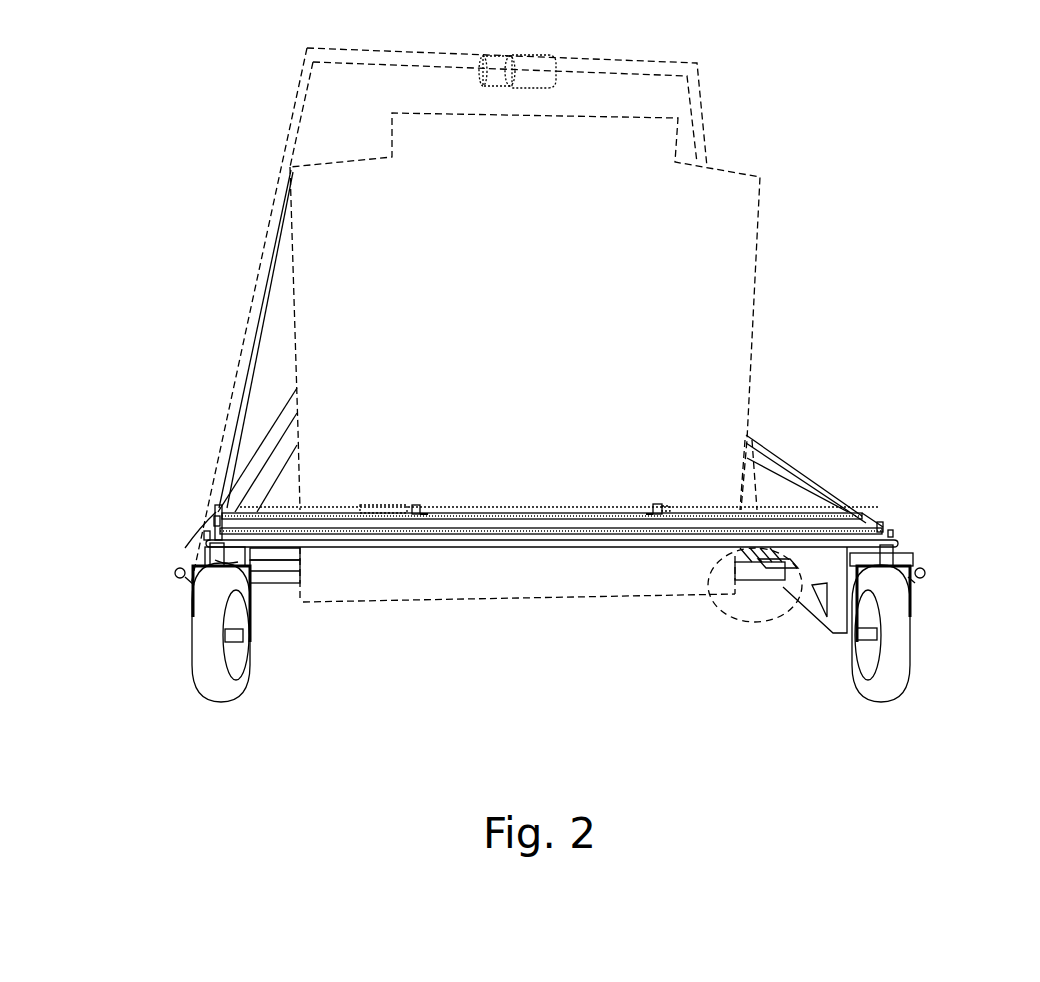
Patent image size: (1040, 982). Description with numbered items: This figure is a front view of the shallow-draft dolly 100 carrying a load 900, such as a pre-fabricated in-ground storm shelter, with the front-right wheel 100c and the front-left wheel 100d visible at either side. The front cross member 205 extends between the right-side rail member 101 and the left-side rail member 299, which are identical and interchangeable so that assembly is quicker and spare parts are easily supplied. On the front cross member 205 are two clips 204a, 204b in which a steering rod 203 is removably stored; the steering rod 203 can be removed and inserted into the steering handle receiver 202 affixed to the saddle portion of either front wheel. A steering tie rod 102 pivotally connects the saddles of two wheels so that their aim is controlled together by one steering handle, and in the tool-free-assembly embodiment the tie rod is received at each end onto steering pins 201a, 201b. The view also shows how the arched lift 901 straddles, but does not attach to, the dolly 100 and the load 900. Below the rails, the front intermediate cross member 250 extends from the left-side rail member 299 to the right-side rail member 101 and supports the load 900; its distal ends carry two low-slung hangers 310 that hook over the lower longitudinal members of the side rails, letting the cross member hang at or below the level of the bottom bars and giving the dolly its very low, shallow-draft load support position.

The shallow-draft dolly 100 is at (915, 150).
The front-right wheel 100c is at (200, 700).
The front-left wheel 100d is at (868, 700).
The right-side rail member 101 is at (185, 472).
The steering tie rod 102 is at (635, 546).
The steering pin 201a is at (205, 535).
The steering pin 201b is at (895, 532).
The steering handle receiver 202 is at (172, 578).
The steering rod 203 is at (538, 505).
The clip 204a is at (418, 504).
The clip 204b is at (660, 503).
The front cross member 205 is at (800, 527).
The front intermediate cross member 250 is at (280, 583).
The left-side rail member 299 is at (868, 486).
The low-slung hanger 310 is at (745, 622).
The load 900 is at (711, 236).
The arched lift 901 is at (291, 108).